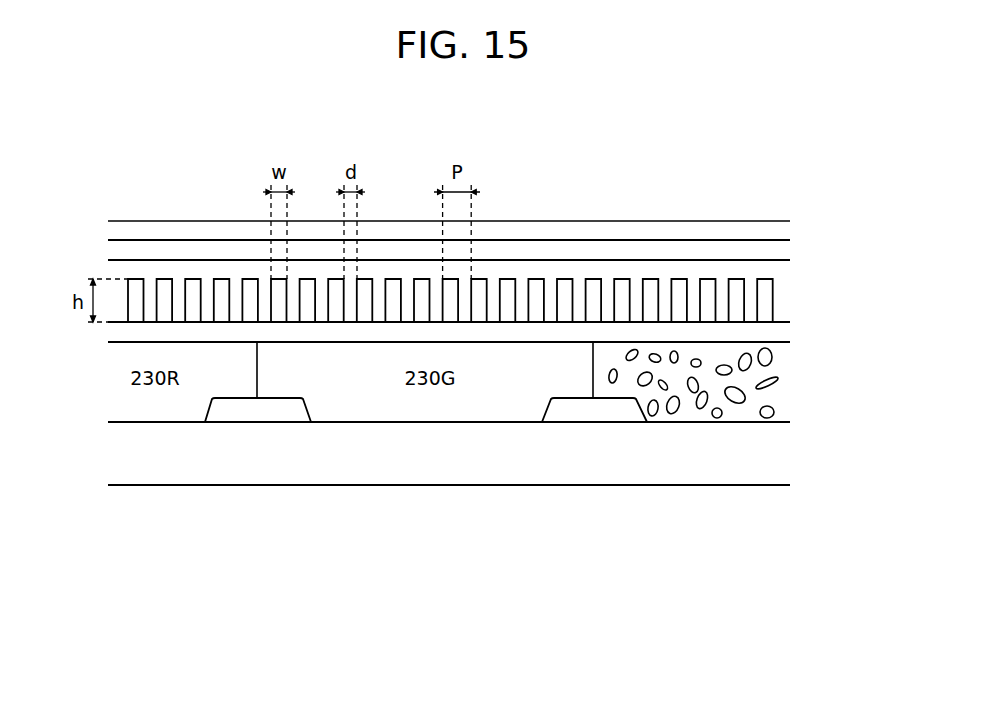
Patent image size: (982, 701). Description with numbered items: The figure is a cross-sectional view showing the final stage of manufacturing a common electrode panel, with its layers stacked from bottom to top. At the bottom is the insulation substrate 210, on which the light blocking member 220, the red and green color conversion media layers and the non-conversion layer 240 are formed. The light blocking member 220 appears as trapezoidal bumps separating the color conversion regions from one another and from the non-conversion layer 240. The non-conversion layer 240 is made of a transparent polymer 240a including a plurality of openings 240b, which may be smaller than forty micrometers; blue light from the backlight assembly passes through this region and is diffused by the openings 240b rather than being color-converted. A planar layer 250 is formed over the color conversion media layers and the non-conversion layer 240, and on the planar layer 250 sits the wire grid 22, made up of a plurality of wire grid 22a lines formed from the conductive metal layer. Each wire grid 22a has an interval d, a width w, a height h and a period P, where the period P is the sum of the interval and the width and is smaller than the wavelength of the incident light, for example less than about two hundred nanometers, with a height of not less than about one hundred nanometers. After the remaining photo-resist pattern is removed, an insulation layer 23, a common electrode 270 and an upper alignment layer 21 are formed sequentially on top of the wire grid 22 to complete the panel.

The upper alignment layer 21 is at (780, 230).
The common electrode 270 is at (781, 251).
The insulation layer 23 is at (767, 271).
The wire grid 22 is at (449, 216).
The wire grid 22a is at (622, 288).
The planar layer 250 is at (781, 331).
The light blocking member 220 is at (264, 414).
The insulation substrate 210 is at (433, 458).
The non-conversion layer 240 is at (693, 469).
The transparent polymer 240a is at (665, 415).
The openings 240b is at (738, 402).